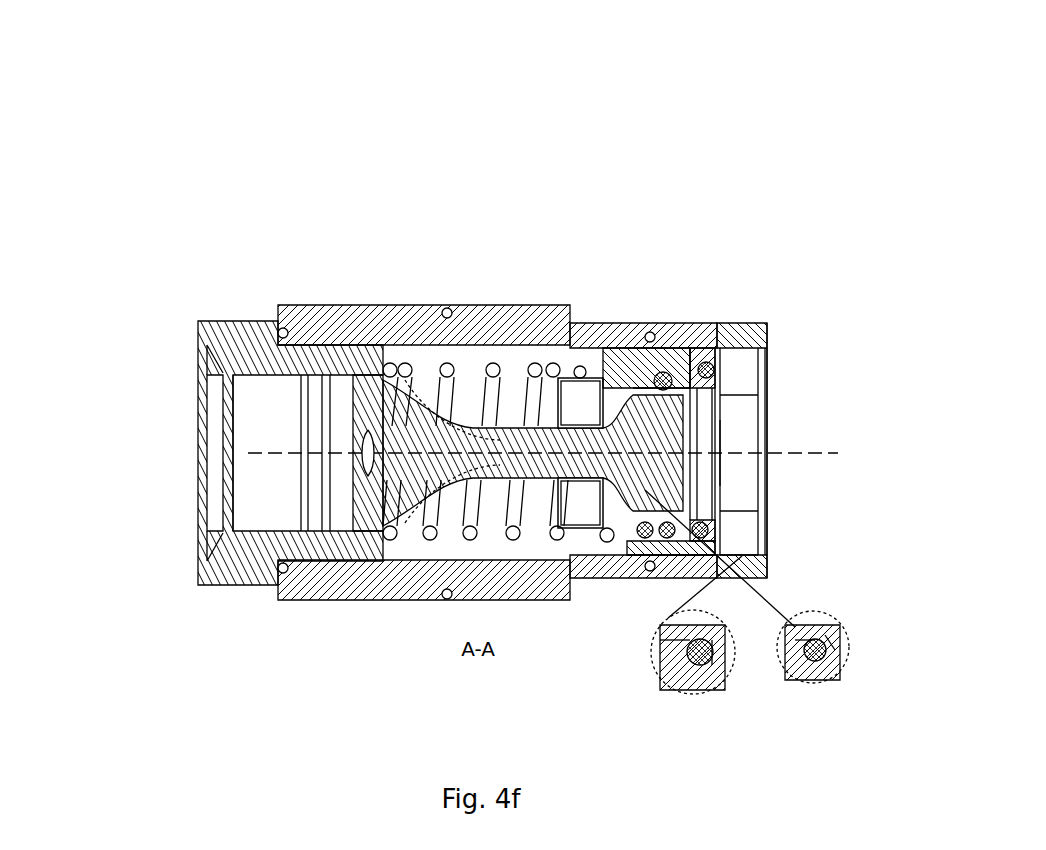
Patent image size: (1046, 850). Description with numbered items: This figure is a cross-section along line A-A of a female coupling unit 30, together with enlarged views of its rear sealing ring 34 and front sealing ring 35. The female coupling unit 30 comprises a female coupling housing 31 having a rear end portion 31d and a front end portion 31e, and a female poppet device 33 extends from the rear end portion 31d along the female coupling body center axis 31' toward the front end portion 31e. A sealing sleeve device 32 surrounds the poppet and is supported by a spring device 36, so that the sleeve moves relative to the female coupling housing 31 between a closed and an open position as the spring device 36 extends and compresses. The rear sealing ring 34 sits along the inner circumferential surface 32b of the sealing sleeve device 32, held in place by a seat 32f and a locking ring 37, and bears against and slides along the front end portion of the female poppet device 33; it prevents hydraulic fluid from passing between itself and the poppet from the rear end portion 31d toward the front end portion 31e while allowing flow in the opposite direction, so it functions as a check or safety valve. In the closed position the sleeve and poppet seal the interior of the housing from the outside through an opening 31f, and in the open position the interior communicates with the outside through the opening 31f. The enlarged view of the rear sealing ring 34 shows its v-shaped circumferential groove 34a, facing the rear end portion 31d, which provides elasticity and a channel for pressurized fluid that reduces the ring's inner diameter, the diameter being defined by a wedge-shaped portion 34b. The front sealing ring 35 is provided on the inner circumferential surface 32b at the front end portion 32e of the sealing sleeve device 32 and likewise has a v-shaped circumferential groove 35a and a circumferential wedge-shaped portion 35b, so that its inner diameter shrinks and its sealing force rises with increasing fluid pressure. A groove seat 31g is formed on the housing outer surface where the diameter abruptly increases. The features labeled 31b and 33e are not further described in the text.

The female coupling unit 30 is at (325, 105).
The female coupling housing 31 is at (668, 408).
The female coupling body center axis 31' is at (847, 450).
The housing sleeve 31b is at (400, 345).
The rear end portion 31d is at (217, 363).
The front end portion 31e is at (760, 570).
The opening 31f is at (700, 504).
The groove seat 31g is at (655, 608).
The sealing sleeve device 32 is at (663, 383).
The inner circumferential surface 32b is at (667, 378).
The front end portion of the sealing sleeve device 32e is at (710, 355).
The seat 32f is at (745, 405).
The female poppet device 33 is at (543, 443).
The plunger end 33e is at (745, 443).
The rear sealing ring 34 is at (675, 383).
The circumferential groove 34a is at (655, 662).
The wedge-shaped portion 34b is at (718, 648).
The front sealing ring 35 is at (728, 405).
The circumferential groove 35a is at (803, 658).
The circumferential wedge-shaped portion 35b is at (833, 632).
The spring device 36 is at (477, 540).
The locking ring 37 is at (650, 357).